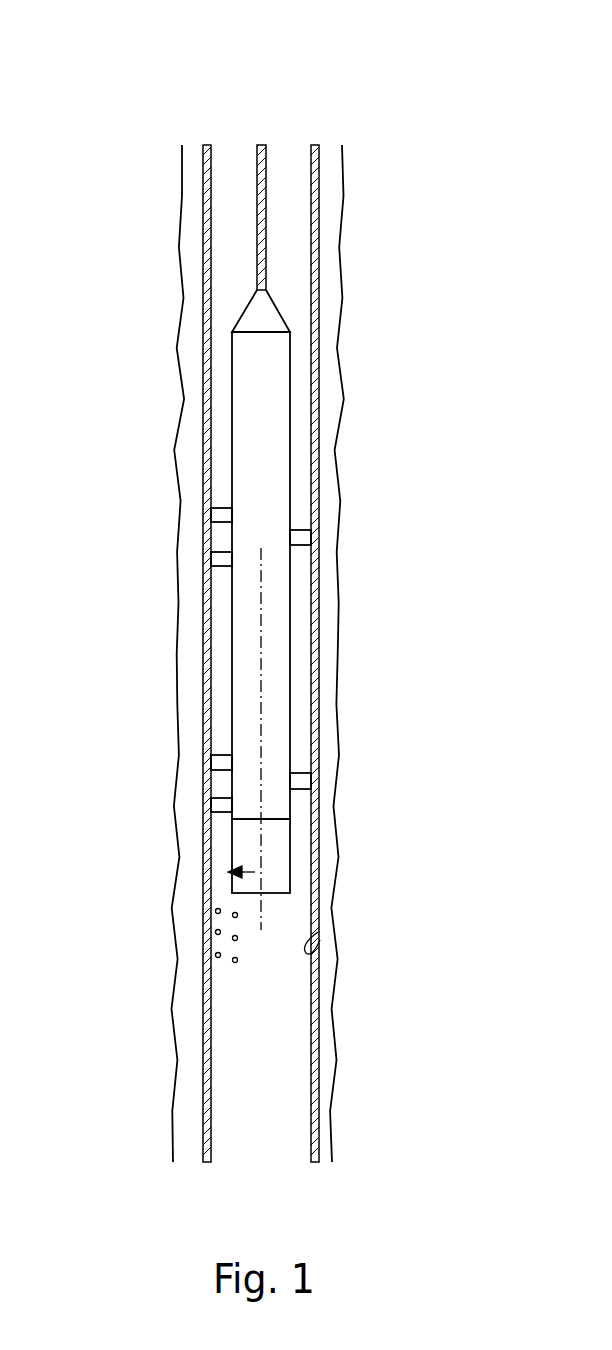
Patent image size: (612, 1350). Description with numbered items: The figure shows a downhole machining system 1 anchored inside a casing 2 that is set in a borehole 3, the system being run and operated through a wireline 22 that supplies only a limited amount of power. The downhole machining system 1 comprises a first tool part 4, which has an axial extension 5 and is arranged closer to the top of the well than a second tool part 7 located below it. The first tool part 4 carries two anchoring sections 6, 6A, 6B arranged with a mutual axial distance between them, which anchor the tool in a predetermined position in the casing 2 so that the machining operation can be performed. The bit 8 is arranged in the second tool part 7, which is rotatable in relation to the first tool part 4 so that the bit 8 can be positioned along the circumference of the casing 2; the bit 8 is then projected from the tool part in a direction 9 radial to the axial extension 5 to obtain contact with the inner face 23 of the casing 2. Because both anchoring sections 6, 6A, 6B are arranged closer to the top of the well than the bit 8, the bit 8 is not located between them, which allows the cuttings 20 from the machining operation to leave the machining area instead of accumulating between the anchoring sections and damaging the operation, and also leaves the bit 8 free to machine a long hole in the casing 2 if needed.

The downhole machining system 1 is at (98, 90).
The casing 2 is at (315, 225).
The borehole 3 is at (328, 261).
The first tool part 4 is at (275, 630).
The axial extension 5 is at (261, 578).
The anchoring section 6 is at (217, 513).
The anchoring section 6A is at (300, 537).
The anchoring section 6B is at (217, 760).
The second tool part 7 is at (275, 864).
The bit 8 is at (217, 872).
The radial direction 9 is at (243, 876).
The cuttings 20 is at (218, 955).
The wireline 22 is at (257, 190).
The inner face 23 is at (318, 932).